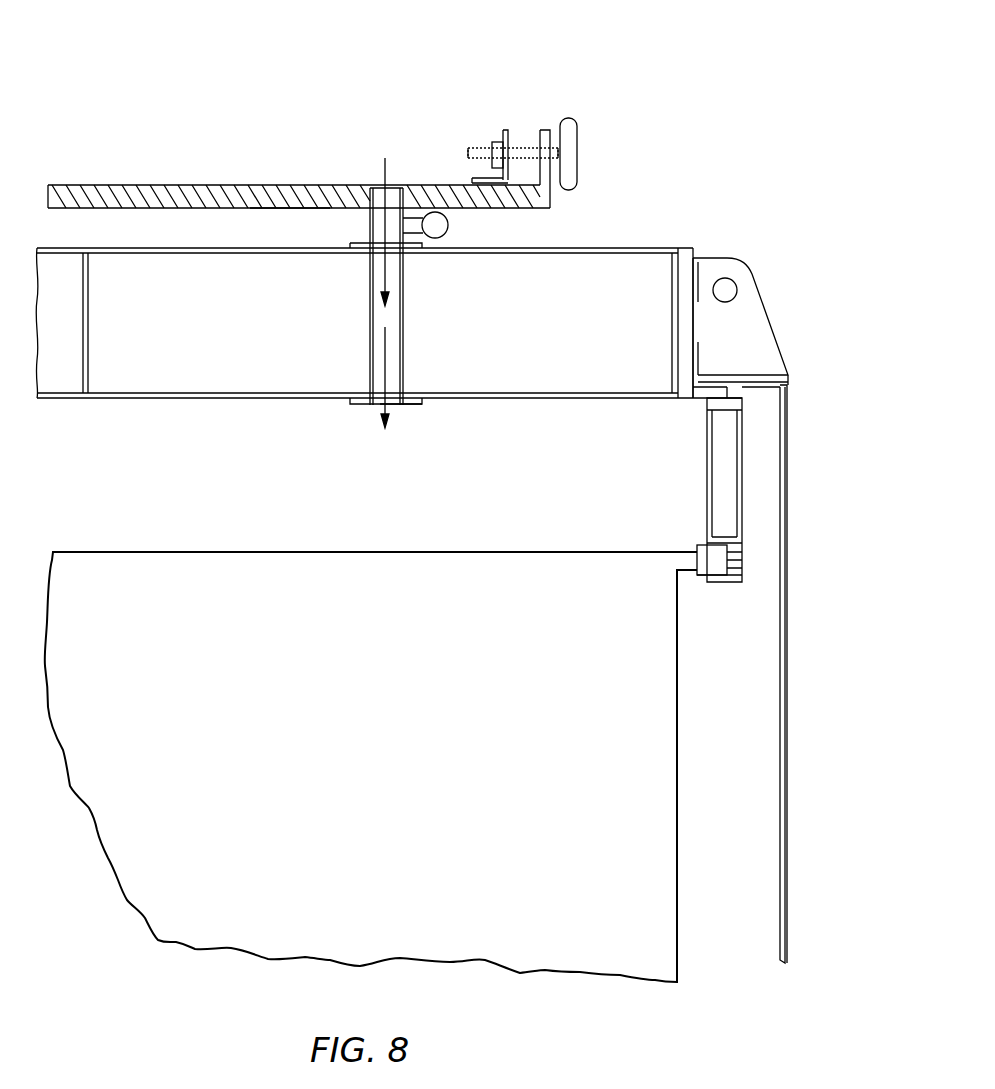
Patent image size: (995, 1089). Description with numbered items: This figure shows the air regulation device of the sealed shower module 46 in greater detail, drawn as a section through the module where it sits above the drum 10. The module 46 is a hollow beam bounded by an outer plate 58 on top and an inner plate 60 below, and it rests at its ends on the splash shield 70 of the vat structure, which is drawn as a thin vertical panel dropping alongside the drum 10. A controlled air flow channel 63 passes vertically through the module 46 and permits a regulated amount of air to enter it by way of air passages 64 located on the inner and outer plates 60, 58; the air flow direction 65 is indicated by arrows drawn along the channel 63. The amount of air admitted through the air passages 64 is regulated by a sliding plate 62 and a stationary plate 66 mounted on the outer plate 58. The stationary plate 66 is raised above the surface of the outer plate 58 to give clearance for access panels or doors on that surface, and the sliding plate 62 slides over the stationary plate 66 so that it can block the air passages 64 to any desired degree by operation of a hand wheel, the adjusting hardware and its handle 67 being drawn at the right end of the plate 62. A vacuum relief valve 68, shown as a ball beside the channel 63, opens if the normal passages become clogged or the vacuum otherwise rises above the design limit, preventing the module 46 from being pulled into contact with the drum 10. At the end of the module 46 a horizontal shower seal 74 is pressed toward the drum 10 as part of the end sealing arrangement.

The drum 10 is at (488, 707).
The shower module 46 is at (308, 346).
The outer plate 58 is at (570, 248).
The inner plate 60 is at (565, 400).
The sliding plate 62 is at (217, 185).
The controlled air flow channel 63 is at (403, 313).
The air passages 64 is at (395, 405).
The rod / direction of movement 65 is at (395, 185).
The stationary plate 66 is at (292, 212).
The clamp knob 67 is at (577, 130).
The vacuum relief valve 68 is at (449, 225).
The splash shield 70 is at (787, 690).
The horizontal shower seal 74 is at (718, 553).